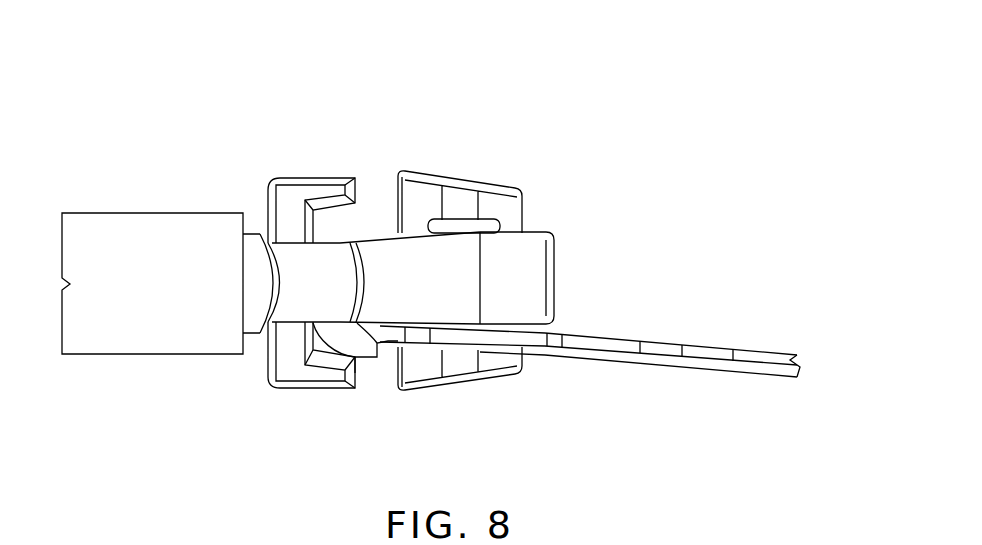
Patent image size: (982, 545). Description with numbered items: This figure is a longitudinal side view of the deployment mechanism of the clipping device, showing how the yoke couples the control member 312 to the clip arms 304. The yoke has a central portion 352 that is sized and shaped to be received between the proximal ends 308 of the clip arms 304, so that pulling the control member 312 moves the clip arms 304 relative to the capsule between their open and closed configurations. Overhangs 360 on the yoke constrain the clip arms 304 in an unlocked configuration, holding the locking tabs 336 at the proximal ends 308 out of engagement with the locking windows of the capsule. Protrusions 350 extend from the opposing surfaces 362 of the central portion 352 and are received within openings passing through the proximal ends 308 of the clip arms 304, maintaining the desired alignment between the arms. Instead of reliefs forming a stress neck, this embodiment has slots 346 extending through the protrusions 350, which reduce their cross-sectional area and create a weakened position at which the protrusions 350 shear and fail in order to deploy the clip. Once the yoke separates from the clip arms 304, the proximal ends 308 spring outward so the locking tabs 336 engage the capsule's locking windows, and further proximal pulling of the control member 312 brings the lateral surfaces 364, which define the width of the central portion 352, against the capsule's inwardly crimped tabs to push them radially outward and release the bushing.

The control member 312 is at (102, 238).
The overhangs 360 is at (297, 188).
The opposing surfaces 362 is at (397, 232).
The lateral surfaces 364 is at (425, 268).
The protrusions 350 is at (458, 180).
The slots 346 is at (487, 215).
The central portion 352 is at (527, 262).
The proximal ends 308 is at (520, 343).
The clip arms 304 is at (770, 360).
The locking tabs 336 is at (362, 345).